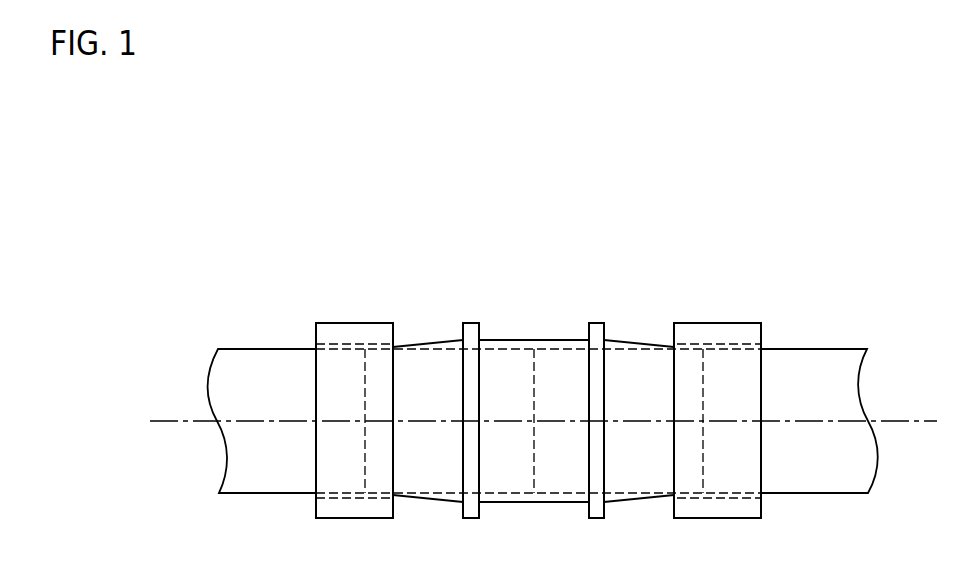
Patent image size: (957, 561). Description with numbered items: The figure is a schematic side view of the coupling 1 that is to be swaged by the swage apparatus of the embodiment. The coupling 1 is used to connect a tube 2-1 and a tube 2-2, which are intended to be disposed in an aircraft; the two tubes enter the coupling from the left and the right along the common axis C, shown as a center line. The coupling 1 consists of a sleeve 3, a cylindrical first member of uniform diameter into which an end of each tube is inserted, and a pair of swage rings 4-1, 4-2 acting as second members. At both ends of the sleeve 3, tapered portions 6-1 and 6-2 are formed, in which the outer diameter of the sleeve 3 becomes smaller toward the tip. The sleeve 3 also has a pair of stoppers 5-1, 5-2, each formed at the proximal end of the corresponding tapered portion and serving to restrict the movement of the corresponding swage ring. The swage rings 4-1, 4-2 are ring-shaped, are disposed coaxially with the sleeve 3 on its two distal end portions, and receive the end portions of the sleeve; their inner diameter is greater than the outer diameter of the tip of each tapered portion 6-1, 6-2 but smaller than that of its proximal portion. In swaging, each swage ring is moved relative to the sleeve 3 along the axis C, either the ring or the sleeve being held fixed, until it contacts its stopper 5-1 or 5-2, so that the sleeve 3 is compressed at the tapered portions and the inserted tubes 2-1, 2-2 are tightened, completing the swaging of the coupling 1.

The coupling 1 is at (651, 257).
The tube 2-1 is at (258, 349).
The tube 2-2 is at (833, 349).
The sleeve 3 is at (521, 340).
The swage ring 4-1 is at (353, 323).
The swage ring 4-2 is at (713, 323).
The stopper 5-1 is at (470, 323).
The stopper 5-2 is at (594, 323).
The tapered portion 6-1 is at (431, 341).
The tapered portion 6-2 is at (637, 341).
The axis of the coupling C is at (921, 425).